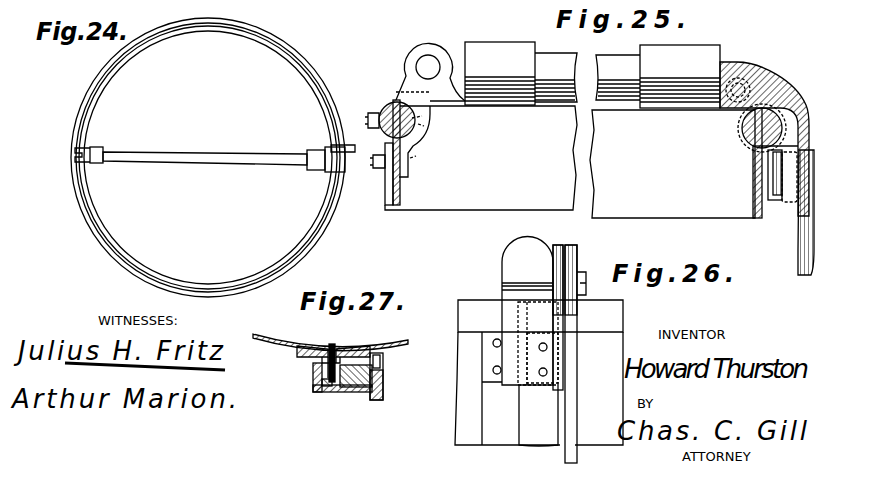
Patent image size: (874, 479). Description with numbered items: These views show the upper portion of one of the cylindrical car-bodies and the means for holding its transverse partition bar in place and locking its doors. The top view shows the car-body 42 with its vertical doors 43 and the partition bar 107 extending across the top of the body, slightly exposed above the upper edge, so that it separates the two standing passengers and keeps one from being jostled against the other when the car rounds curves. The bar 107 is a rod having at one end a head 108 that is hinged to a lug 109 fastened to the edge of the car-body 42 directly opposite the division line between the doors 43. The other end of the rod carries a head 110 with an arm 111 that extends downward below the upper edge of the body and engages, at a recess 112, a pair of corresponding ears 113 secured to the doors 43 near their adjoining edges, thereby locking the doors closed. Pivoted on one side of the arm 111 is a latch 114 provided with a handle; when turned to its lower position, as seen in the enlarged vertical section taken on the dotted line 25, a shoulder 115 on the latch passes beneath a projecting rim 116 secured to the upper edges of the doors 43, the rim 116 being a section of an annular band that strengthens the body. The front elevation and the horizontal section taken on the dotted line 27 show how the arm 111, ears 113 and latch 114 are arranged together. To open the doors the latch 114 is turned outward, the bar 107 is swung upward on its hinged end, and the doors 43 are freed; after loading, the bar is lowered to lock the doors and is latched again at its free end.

In FIG. 24, the section line 25- 25 is at (110, 170).
In FIG. 25, the section line 25- 25 is at (368, 185).
In FIG. 26, the section line 27- 27 is at (480, 357).
In FIG. 24, the car-body 42 is at (181, 53).
In FIG. 25, the car-body 42 is at (570, 162).
In FIG. 24, the doors 43 is at (321, 79).
In FIG. 26, the doors 43 is at (470, 437).
In FIG. 27, the doors 43 is at (291, 331).
In FIG. 24, the transverse partition bar 107 is at (205, 173).
In FIG. 25, the transverse partition bar 107 is at (611, 47).
In FIG. 24, the head 108 is at (98, 150).
In FIG. 25, the head 108 is at (508, 35).
In FIG. 25, the lug 109 is at (404, 96).
In FIG. 24, the head 110 is at (313, 169).
In FIG. 25, the head 110 is at (697, 58).
In FIG. 25, the arm 111 is at (786, 104).
In FIG. 26, the arm 111 is at (508, 387).
In FIG. 27, the arm 111 is at (313, 375).
In FIG. 27, the recess 112 is at (330, 386).
In FIG. 27, the ears 113 is at (316, 388).
In FIG. 24, the latch 114 is at (320, 146).
In FIG. 25, the latch 114 is at (752, 83).
In FIG. 26, the latch 114 is at (565, 444).
In FIG. 27, the latch 114 is at (384, 384).
In FIG. 25, the shoulder 115 is at (746, 140).
In FIG. 27, the shoulder 115 is at (376, 354).
In FIG. 25, the projecting rim 116 is at (740, 124).